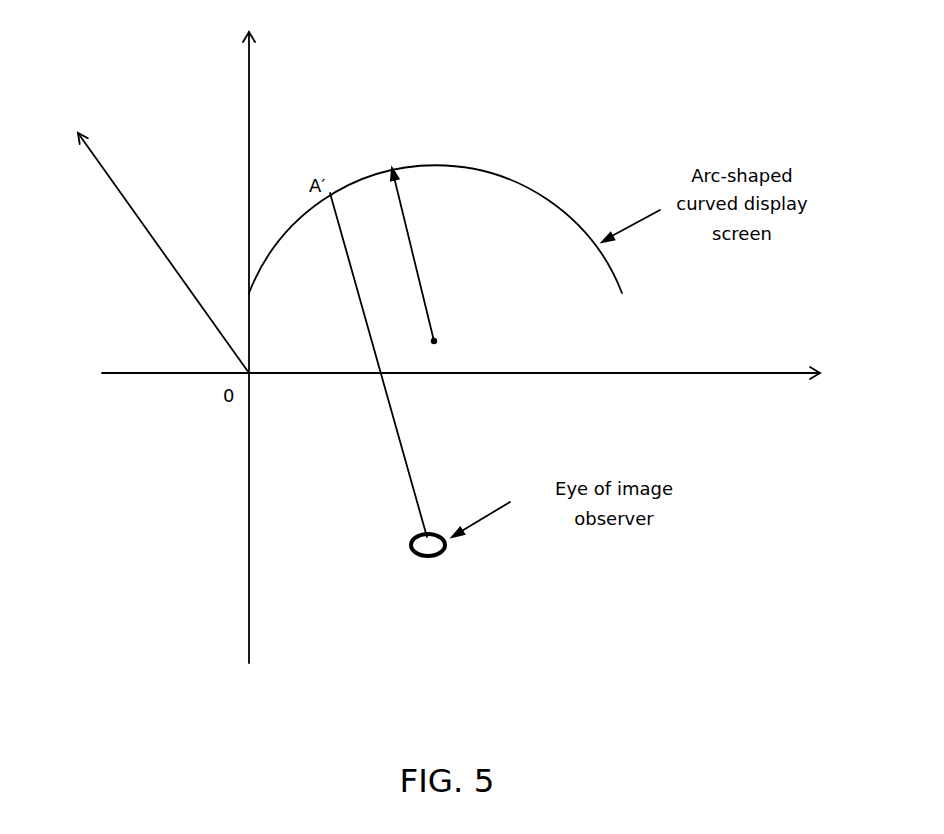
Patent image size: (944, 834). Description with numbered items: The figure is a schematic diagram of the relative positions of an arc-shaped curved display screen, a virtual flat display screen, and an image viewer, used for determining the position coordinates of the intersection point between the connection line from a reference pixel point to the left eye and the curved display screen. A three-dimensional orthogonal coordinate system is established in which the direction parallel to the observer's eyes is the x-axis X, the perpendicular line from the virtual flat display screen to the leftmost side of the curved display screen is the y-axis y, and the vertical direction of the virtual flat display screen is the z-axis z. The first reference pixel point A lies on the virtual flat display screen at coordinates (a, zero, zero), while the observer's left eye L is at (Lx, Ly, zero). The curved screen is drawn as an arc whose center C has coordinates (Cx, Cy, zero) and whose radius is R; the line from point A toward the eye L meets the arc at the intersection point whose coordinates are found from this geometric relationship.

The x-axis X is at (461, 389).
The y-axis y is at (260, 345).
The z-axis z is at (163, 243).
The first reference pixel point A is at (370, 365).
The radius of the circle R is at (415, 254).
The center of the arc C is at (477, 349).
The observer's left eye L is at (459, 560).